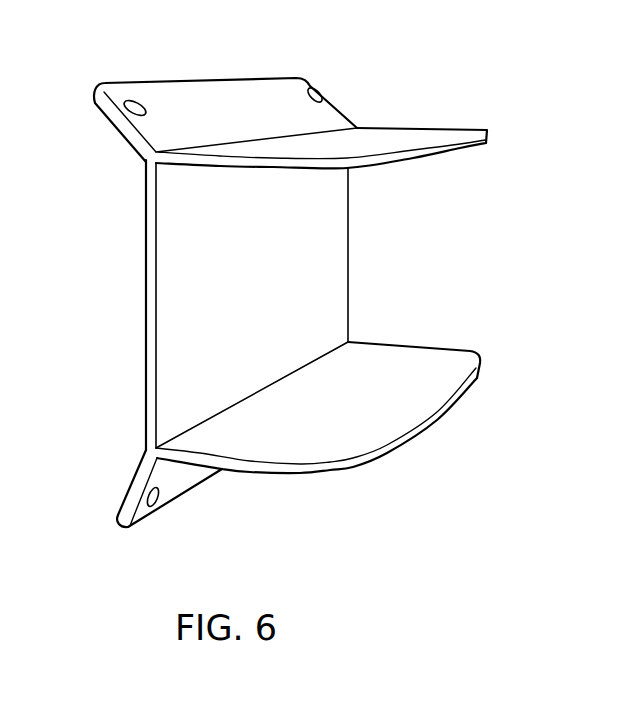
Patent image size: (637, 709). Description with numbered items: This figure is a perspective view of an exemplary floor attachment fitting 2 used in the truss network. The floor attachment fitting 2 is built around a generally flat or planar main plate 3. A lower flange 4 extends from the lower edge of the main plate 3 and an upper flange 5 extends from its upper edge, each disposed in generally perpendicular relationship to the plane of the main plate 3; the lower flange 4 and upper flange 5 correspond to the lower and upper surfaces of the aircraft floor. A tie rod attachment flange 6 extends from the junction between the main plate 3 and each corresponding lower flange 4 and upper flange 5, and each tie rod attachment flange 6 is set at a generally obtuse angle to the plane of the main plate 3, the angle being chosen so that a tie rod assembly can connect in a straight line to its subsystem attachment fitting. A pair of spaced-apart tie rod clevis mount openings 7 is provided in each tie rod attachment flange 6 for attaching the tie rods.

The floor attachment fitting 2 is at (136, 222).
The main plate 3 is at (180, 312).
The lower flange 4 is at (403, 367).
The upper flange 5 is at (435, 148).
The tie rod attachment flange 6 is at (222, 100).
The tie rod clevis mount opening 7 is at (137, 114).